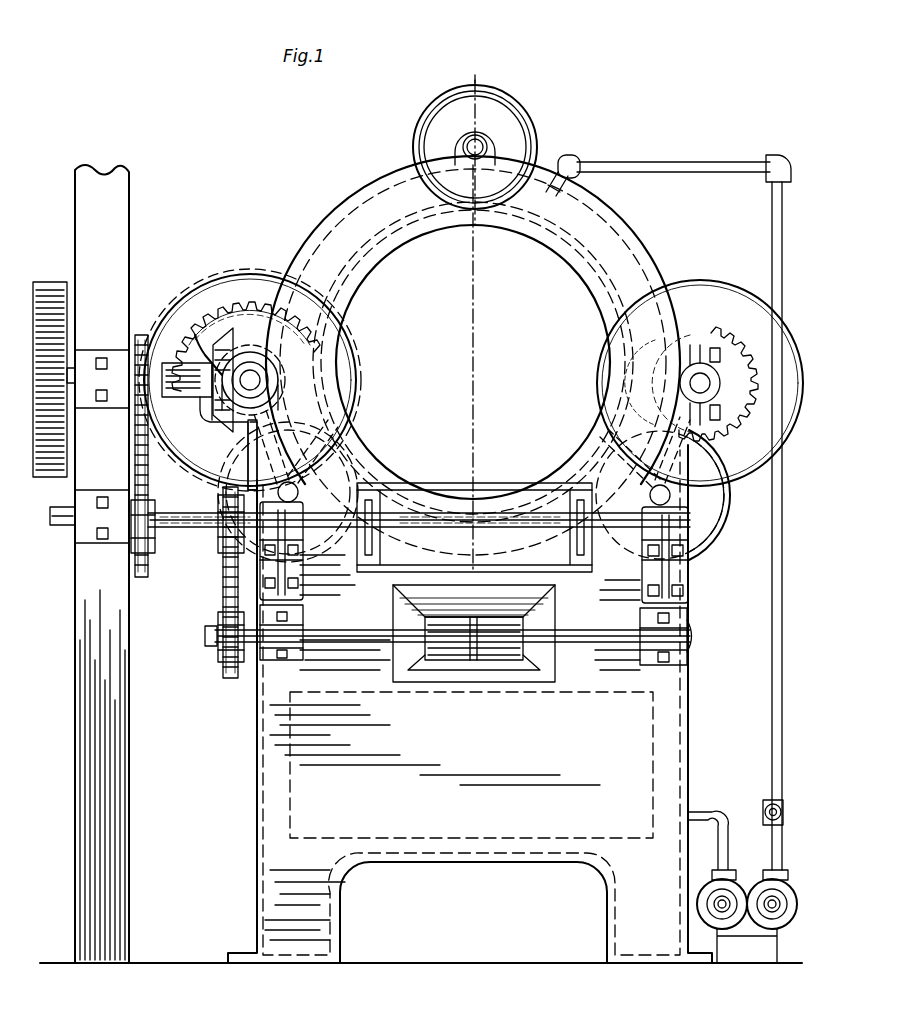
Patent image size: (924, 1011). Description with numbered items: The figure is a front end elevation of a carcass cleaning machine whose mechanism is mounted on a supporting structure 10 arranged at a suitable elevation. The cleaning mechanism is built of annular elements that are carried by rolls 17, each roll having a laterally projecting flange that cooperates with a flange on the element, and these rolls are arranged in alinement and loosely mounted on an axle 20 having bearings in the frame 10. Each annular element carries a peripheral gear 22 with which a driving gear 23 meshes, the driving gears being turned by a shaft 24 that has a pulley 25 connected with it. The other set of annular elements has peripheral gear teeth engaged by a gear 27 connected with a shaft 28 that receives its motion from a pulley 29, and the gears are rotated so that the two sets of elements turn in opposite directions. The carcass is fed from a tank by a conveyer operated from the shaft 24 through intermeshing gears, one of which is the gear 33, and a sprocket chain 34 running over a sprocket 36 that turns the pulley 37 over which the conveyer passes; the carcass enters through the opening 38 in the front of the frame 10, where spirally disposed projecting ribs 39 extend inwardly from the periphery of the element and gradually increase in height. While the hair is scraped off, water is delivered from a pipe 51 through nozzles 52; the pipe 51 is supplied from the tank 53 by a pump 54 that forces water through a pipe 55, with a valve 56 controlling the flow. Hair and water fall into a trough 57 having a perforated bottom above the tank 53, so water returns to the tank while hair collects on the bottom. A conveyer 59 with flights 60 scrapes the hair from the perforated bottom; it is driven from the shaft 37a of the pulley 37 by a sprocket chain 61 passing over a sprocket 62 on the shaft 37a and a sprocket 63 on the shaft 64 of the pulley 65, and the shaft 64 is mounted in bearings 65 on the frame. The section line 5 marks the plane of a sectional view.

The section line 5 is at (500, 77).
The supporting structure 10 is at (290, 884).
The rolls 17 is at (508, 108).
The axle 20 is at (298, 490).
The peripheral gear 22 is at (209, 426).
The driving gear 23 is at (200, 315).
The shaft 24 is at (252, 372).
The pulley 25 is at (249, 276).
The gear 27 is at (706, 378).
The shaft 28 is at (730, 330).
The pulley 29 is at (760, 476).
The intermeshing gear 33 is at (210, 345).
The sprocket chain 34 is at (140, 458).
The sprocket 36 is at (155, 560).
The pulley 37 is at (388, 500).
The shaft 37a is at (60, 526).
The opening 38 is at (552, 240).
The spirally disposed projecting ribs 39 is at (632, 358).
The pipe 51 is at (586, 162).
The nozzles 52 is at (578, 188).
The tank 53 is at (655, 814).
The pump 54 is at (738, 886).
The pipe 55 is at (770, 683).
The valve 56 is at (780, 810).
The trough 57 is at (572, 582).
The conveyer 59 is at (468, 668).
The flights 60 is at (432, 672).
The sprocket chain 61 is at (226, 590).
The sprocket 62 is at (226, 535).
The sprocket 63 is at (218, 663).
The shaft 64 is at (216, 634).
The pulley / bearings 65 is at (272, 642).